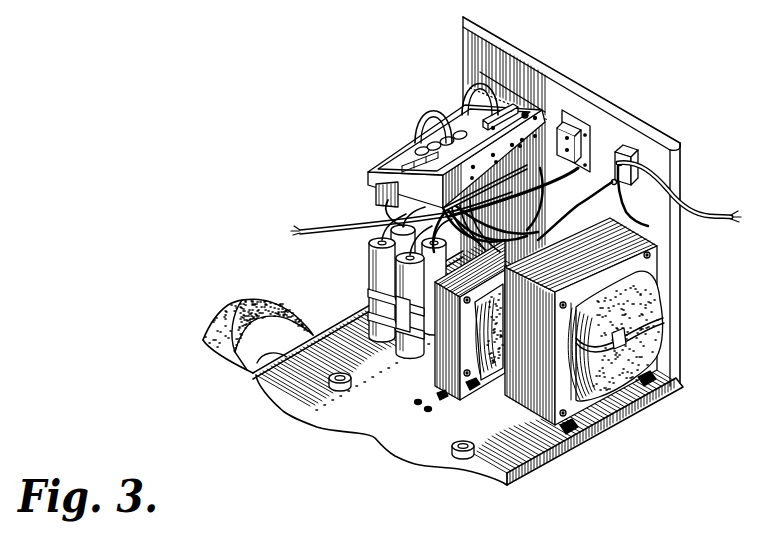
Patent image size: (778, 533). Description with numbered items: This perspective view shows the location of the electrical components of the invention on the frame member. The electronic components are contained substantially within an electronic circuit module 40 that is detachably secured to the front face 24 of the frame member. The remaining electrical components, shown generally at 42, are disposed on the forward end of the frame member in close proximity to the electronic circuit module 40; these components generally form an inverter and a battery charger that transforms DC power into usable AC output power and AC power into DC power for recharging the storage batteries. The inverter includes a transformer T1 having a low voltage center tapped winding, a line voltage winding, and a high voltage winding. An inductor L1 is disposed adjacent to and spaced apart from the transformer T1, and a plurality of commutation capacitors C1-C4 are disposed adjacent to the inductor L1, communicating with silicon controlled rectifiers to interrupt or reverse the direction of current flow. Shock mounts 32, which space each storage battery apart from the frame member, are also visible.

The front face 24 is at (580, 84).
The electronic circuit module 40 is at (441, 103).
The commutation capacitors C1-C4 is at (373, 248).
The inductor L1 is at (364, 313).
The shock mounts 32 is at (454, 447).
The transformer T1 is at (541, 368).
The remaining electrical components 42 is at (484, 411).